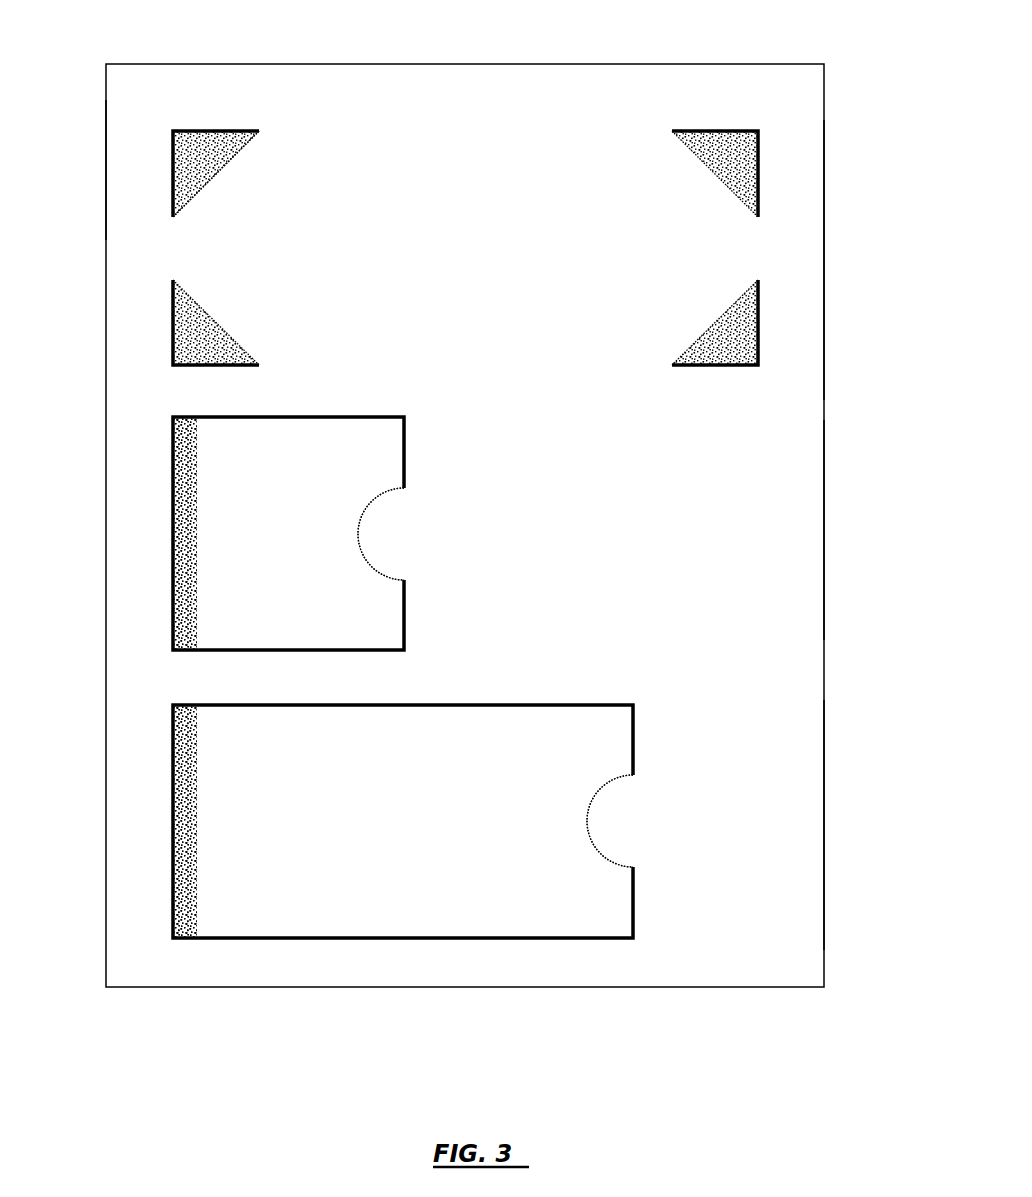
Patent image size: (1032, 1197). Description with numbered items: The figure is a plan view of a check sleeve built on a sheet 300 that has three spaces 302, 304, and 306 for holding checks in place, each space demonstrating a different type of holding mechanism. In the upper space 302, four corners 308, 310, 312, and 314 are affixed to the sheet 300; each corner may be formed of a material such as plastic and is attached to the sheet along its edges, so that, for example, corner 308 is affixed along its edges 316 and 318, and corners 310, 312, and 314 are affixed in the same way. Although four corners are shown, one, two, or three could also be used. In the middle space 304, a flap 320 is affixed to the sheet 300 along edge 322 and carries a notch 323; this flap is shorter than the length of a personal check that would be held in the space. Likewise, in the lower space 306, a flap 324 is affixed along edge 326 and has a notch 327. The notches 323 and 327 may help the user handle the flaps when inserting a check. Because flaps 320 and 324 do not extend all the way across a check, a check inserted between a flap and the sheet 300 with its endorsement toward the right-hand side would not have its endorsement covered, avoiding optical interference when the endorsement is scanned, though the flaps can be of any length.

The sheet 300 is at (585, 52).
The space 302 is at (778, 263).
The space 304 is at (768, 527).
The space 306 is at (778, 818).
The corner 308 is at (250, 173).
The corner 310 is at (692, 175).
The corner 312 is at (233, 313).
The corner 314 is at (682, 332).
The edge 316 is at (197, 121).
The edge 318 is at (163, 183).
The flap 320 is at (390, 588).
The edge 322 is at (205, 507).
The notch 323 is at (382, 518).
The flap 324 is at (602, 753).
The edge 326 is at (197, 797).
The notch 327 is at (602, 825).